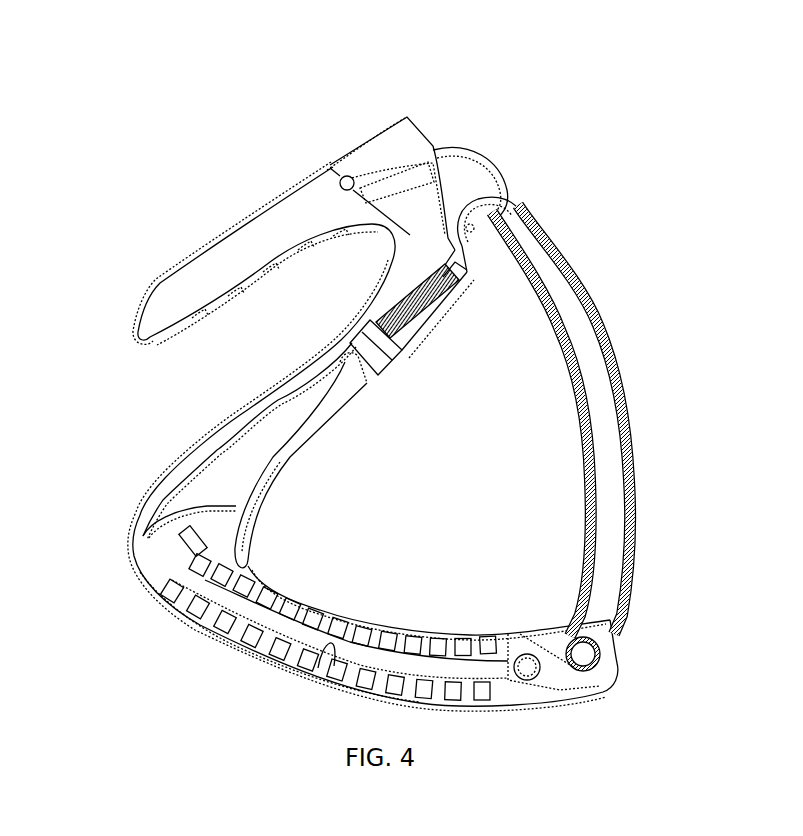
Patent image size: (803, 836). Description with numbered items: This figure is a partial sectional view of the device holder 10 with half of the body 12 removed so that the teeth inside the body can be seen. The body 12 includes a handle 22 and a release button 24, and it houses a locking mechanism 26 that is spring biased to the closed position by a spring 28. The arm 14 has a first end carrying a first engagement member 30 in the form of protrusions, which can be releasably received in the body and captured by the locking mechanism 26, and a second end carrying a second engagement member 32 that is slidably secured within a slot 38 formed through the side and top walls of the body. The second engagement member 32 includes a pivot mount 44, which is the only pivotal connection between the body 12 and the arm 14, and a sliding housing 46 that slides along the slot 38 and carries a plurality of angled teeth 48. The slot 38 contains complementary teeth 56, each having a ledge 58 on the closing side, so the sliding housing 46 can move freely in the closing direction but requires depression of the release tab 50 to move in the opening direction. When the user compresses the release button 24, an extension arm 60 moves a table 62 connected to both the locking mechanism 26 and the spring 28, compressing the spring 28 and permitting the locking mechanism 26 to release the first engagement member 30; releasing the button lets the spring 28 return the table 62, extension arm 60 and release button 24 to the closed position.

The device holder 10 is at (300, 92).
The body 12 is at (155, 458).
The arm 14 is at (618, 346).
The handle 22 is at (173, 270).
The release button 24 is at (417, 128).
The locking mechanism 26 is at (487, 255).
The spring 28 is at (410, 300).
The first engagement member 30 is at (467, 227).
The second engagement member 32 is at (587, 653).
The slot 38 is at (330, 652).
The pivot mount 44 is at (599, 663).
The sliding housing 46 is at (560, 670).
The teeth 48 is at (513, 643).
The release tab 50 is at (524, 670).
The teeth 56 is at (297, 608).
The ledge 58 is at (197, 617).
The extension arm 60 is at (437, 193).
The table 62 is at (338, 190).